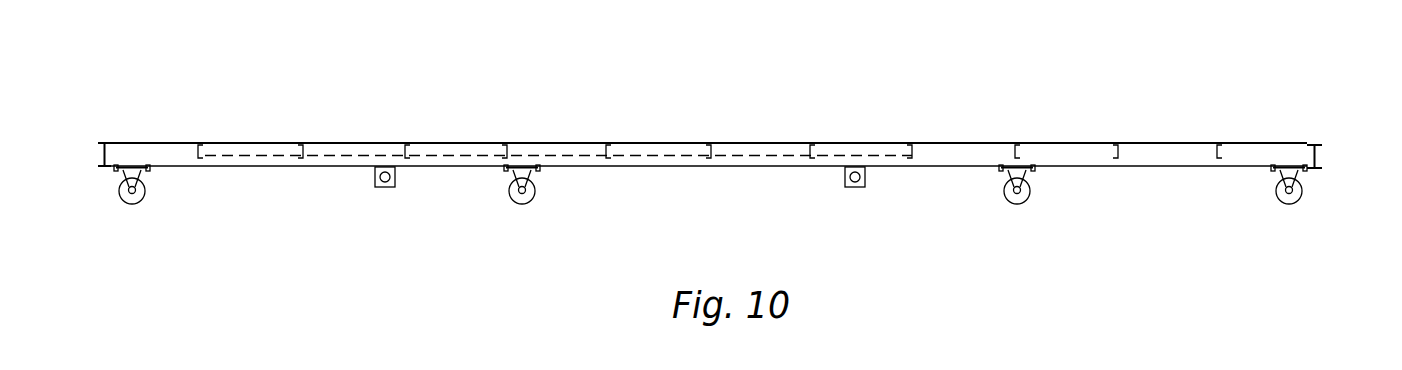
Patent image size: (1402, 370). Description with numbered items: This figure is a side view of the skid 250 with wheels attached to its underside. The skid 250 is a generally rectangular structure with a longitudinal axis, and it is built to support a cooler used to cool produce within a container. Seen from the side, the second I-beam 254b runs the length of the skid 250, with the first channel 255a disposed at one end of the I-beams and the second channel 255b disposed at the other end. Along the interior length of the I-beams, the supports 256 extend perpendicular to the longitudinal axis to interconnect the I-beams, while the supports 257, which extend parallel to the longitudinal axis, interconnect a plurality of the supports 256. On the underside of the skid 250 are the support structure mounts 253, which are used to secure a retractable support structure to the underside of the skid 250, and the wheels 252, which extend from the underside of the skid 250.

The skid 250 is at (761, 88).
The wheels 252 is at (130, 204).
The support structure mounts 253 is at (383, 188).
The second I-beam 254b is at (567, 141).
The first channel 255a is at (1322, 153).
The second channel 255b is at (98, 153).
The supports 256 is at (291, 150).
The supports 257 is at (753, 167).